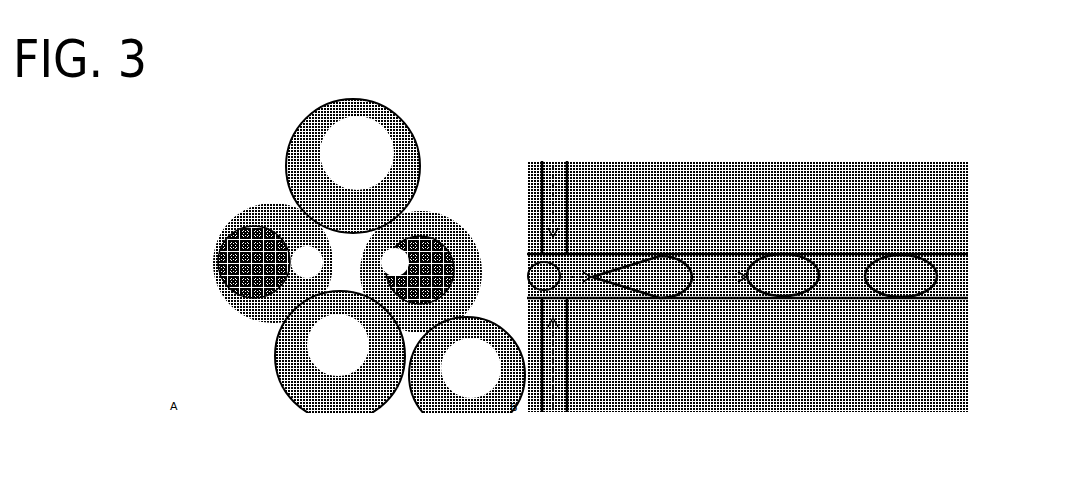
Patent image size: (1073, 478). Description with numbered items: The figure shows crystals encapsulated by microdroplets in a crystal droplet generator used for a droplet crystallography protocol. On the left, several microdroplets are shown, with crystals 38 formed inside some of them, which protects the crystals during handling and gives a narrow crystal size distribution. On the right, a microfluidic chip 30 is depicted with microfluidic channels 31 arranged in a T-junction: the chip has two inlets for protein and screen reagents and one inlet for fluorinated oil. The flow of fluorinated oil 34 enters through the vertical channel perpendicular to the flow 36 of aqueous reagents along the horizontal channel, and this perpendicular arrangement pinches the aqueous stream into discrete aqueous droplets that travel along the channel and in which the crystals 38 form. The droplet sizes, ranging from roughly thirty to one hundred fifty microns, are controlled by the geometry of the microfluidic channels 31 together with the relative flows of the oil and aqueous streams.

The microfluidic chip 30 is at (837, 178).
The microfluidic channels 31 is at (543, 162).
The flow of fluorinated oil 34 is at (553, 357).
The flow of aqueous reagents 36 is at (742, 278).
The crystals 38 is at (347, 268).